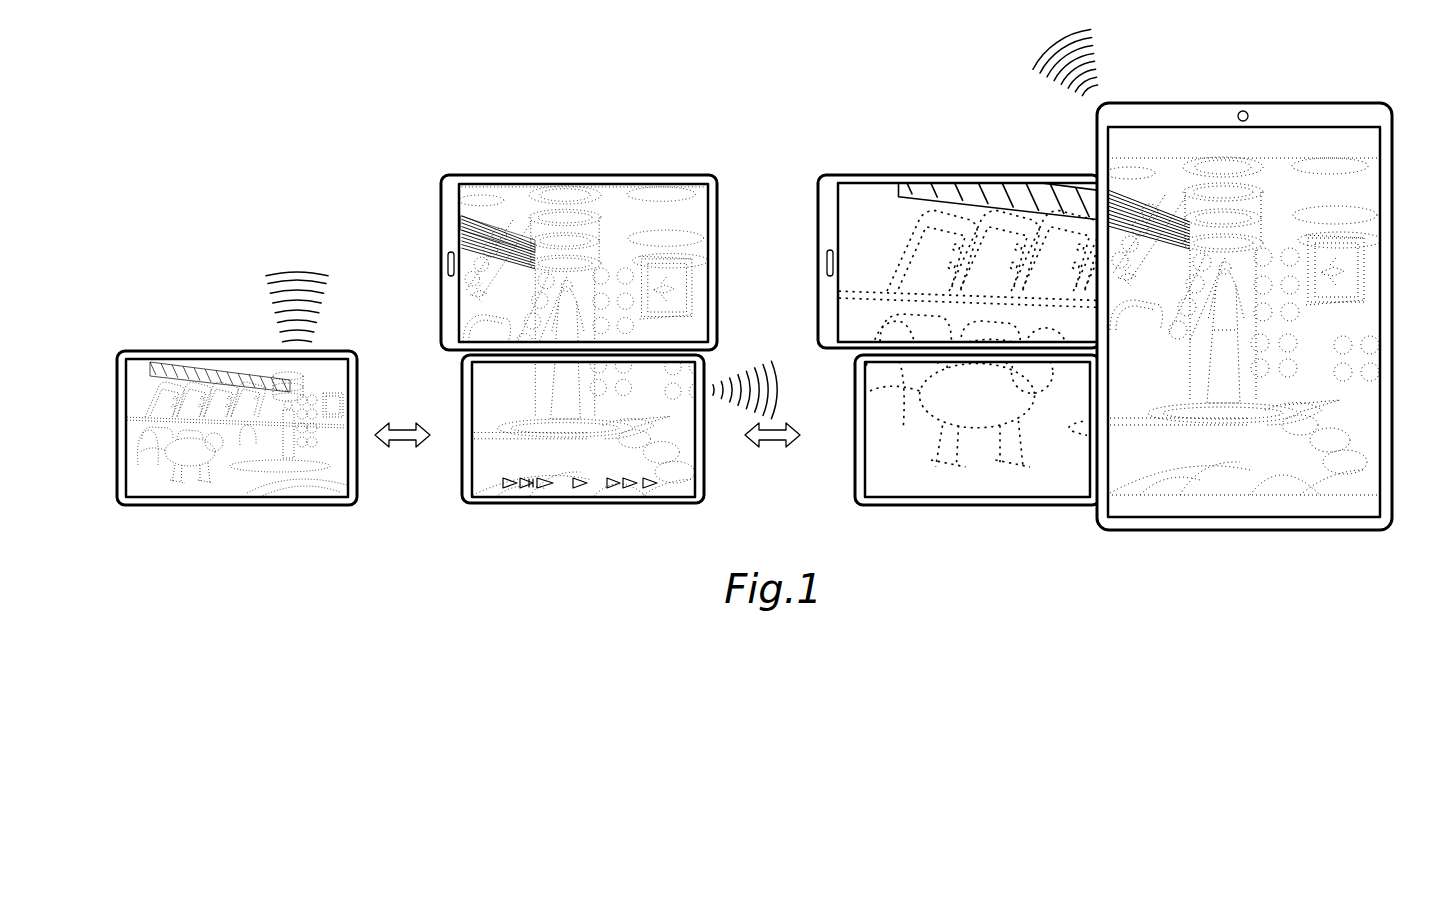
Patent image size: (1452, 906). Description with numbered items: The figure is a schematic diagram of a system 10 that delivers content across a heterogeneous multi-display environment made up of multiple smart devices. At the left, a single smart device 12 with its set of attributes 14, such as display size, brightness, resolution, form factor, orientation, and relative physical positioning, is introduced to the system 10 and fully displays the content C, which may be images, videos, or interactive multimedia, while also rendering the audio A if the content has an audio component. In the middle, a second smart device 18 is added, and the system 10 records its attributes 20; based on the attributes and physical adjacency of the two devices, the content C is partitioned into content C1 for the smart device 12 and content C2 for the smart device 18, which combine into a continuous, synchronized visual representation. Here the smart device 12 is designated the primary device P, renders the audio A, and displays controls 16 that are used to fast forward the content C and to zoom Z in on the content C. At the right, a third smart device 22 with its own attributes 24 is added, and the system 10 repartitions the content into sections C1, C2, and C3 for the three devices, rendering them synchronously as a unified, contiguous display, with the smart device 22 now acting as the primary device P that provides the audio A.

The system 10 is at (336, 170).
The smart device 12 is at (214, 345).
The set of attributes 14 is at (180, 498).
The controls 16 is at (628, 486).
The smart device 18 is at (474, 164).
The attributes 20 is at (620, 175).
The smart device 22 is at (1204, 526).
The attributes 24 is at (1275, 103).
The audio A is at (296, 268).
The content C is at (160, 372).
The content C1 is at (560, 490).
The content C2 is at (526, 190).
The content C3 is at (1358, 184).
The primary device P is at (700, 478).
The zoom Z is at (464, 234).